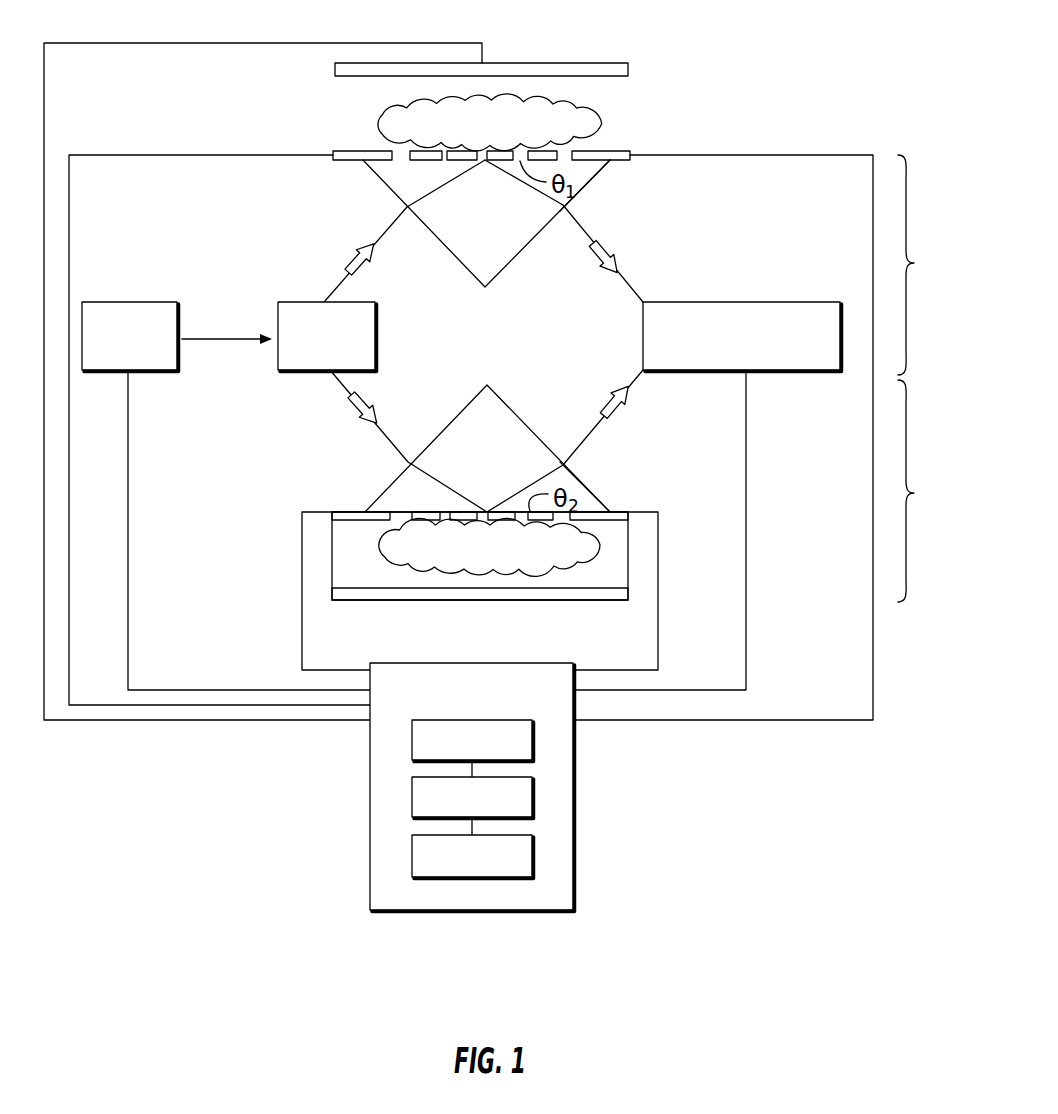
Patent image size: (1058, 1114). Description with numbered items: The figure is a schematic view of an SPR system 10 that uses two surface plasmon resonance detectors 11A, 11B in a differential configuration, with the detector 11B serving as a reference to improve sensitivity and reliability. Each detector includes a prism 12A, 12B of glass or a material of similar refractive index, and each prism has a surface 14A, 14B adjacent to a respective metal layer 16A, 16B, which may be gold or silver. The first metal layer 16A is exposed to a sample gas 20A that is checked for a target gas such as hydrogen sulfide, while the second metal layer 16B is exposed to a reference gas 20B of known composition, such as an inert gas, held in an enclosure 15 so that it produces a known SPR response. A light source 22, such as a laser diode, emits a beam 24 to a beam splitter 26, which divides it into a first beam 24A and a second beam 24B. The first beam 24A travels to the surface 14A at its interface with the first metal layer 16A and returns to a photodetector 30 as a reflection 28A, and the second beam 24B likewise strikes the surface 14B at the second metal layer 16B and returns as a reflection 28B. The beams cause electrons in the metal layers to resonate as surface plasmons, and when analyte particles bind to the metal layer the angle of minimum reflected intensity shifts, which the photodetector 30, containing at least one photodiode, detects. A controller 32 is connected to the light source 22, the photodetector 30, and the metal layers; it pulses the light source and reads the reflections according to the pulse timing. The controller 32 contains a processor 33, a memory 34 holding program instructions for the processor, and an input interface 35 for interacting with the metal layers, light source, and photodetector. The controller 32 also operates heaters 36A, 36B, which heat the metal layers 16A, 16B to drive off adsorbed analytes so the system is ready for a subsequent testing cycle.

The SPR system 10 is at (754, 86).
The SPR detector 11A is at (930, 265).
The SPR detector 11B is at (930, 491).
The prism 12A is at (476, 270).
The prism 12B is at (477, 406).
The surface 14A is at (590, 180).
The surface 14B is at (586, 490).
The enclosure 15 is at (338, 555).
The first metal layer 16A is at (621, 150).
The second metal layer 16B is at (620, 510).
The sample gas 20A is at (372, 121).
The reference gas 20B is at (557, 568).
The light source 22 is at (153, 373).
The beam 24 is at (223, 338).
The first beam 24A is at (344, 280).
The second beam 24B is at (337, 385).
The beam splitter 26 is at (287, 373).
The reflection 28A is at (577, 228).
The reflection 28B is at (584, 438).
The photodetector 30 is at (783, 302).
The controller 32 is at (472, 787).
The processor 33 is at (411, 797).
The memory 34 is at (411, 857).
The input interface 35 is at (411, 740).
The heater 36A is at (602, 63).
The heater 36B is at (593, 601).